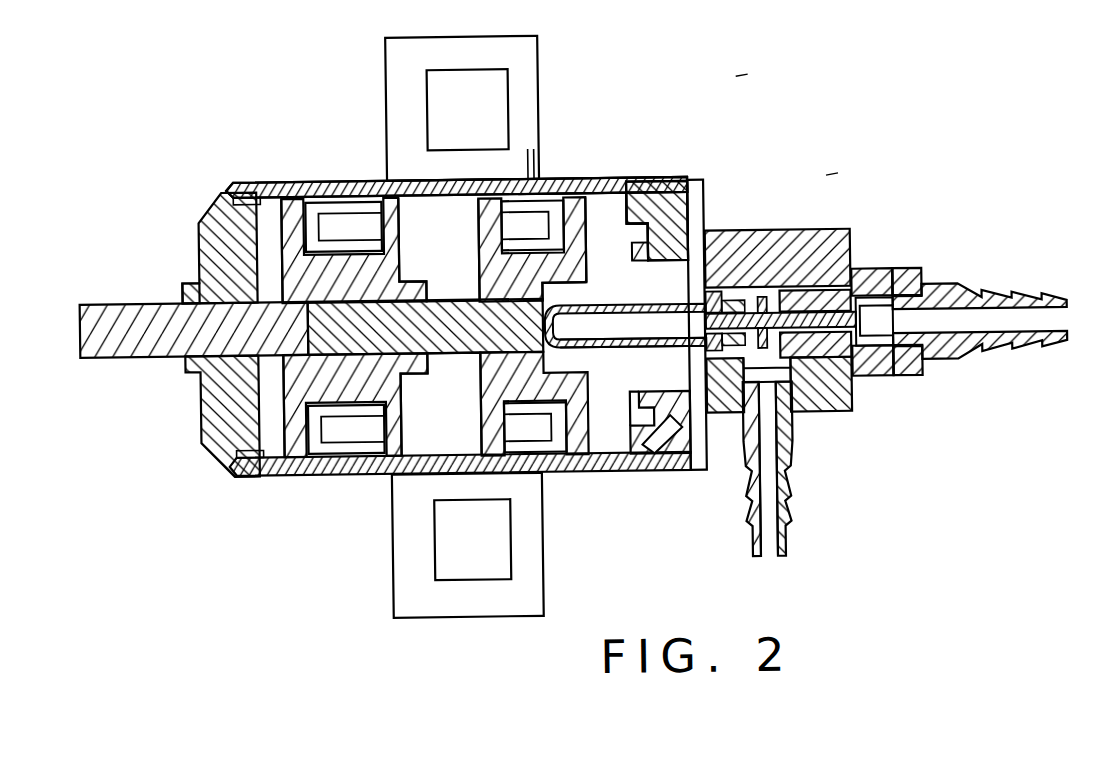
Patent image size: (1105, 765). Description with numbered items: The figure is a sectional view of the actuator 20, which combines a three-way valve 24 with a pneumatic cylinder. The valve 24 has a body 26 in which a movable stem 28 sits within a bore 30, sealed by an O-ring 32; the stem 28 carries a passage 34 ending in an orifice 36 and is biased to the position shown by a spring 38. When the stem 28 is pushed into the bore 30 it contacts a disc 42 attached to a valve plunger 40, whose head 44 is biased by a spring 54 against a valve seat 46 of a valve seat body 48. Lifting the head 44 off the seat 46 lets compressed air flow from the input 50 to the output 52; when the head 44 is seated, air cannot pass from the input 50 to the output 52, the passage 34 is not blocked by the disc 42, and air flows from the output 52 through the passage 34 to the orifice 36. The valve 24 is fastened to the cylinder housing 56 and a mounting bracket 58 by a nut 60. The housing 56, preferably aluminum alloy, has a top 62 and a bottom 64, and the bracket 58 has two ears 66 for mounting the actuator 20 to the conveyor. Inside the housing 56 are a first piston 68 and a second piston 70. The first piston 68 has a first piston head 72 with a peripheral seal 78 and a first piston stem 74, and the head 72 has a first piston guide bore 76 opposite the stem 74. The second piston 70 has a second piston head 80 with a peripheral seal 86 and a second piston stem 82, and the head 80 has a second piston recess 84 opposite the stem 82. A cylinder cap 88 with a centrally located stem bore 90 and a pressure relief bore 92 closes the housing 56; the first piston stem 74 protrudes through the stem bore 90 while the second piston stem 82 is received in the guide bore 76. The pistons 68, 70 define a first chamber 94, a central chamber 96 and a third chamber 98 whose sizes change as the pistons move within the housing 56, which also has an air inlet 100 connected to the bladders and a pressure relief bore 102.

The actuator 20 is at (739, 80).
The three-way valve 24 is at (828, 180).
The body 26 is at (712, 294).
The movable stem 28 is at (606, 308).
The bore 30 is at (634, 260).
The O-ring 32 is at (708, 304).
The passage 34 is at (757, 299).
The orifice 36 is at (578, 341).
The spring 38 is at (747, 372).
The valve plunger 40 is at (808, 299).
The disc 42 is at (767, 294).
The head 44 is at (894, 274).
The valve seat 46 is at (852, 238).
The valve seat body 48 is at (917, 272).
The input 50 is at (1069, 305).
The output 52 is at (785, 559).
The spring 54 is at (879, 339).
The cylinder housing 56 is at (592, 180).
The mounting bracket 58 is at (679, 181).
The nut 60 is at (641, 242).
The top 62 is at (252, 180).
The bottom 64 is at (619, 182).
The ears 66 is at (542, 51).
The first piston 68 is at (394, 210).
The second piston 70 is at (483, 220).
The first piston head 72 is at (299, 200).
The first piston stem 74 is at (139, 300).
The first piston guide bore 76 is at (394, 312).
The peripheral seal 78 is at (335, 208).
The second piston head 80 is at (489, 397).
The second piston stem 82 is at (434, 351).
The second piston recess 84 is at (546, 297).
The peripheral seal 86 is at (569, 458).
The cylinder cap 88 is at (215, 200).
The stem bore 90 is at (200, 266).
The pressure relief bore 92 is at (200, 373).
The first chamber 94 is at (270, 212).
The central chamber 96 is at (409, 182).
The third chamber 98 is at (610, 209).
The air inlet 100 is at (530, 180).
The pressure relief bore 102 is at (661, 458).